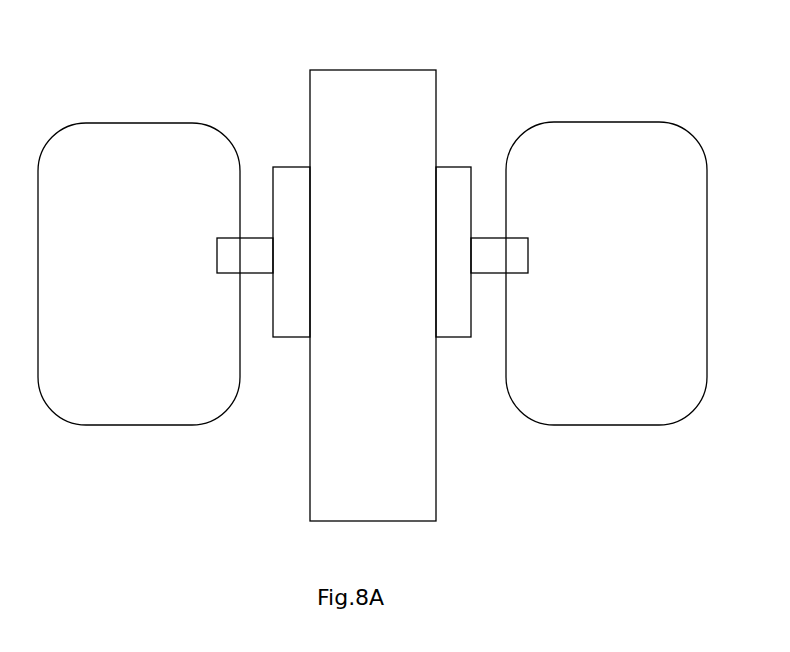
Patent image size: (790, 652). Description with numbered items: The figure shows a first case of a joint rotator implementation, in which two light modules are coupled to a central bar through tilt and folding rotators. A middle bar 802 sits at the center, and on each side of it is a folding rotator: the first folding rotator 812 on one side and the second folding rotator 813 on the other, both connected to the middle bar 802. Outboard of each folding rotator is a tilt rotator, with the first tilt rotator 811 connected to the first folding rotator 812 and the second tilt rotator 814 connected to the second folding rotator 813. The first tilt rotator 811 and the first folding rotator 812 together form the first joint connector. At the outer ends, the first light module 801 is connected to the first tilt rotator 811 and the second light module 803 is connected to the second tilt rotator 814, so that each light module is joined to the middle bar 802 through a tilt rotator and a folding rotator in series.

The first light module 801 is at (107, 265).
The middle bar 802 is at (356, 97).
The second light module 803 is at (590, 185).
The first tilt rotator 811 is at (245, 237).
The first folding rotator 812 is at (300, 331).
The second folding rotator 813 is at (462, 305).
The second tilt rotator 814 is at (496, 259).